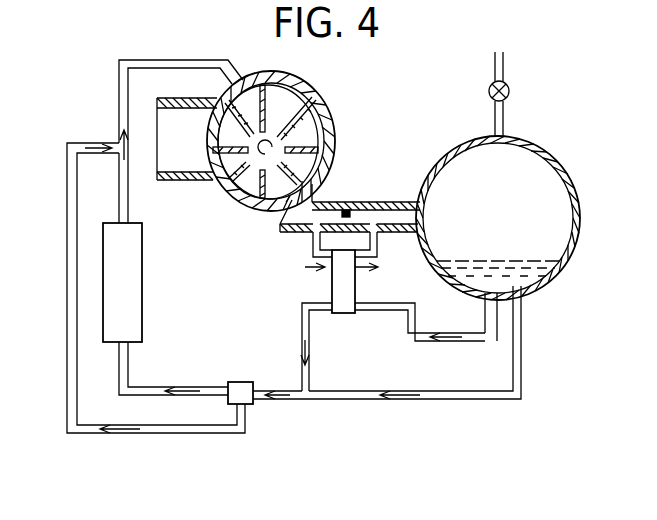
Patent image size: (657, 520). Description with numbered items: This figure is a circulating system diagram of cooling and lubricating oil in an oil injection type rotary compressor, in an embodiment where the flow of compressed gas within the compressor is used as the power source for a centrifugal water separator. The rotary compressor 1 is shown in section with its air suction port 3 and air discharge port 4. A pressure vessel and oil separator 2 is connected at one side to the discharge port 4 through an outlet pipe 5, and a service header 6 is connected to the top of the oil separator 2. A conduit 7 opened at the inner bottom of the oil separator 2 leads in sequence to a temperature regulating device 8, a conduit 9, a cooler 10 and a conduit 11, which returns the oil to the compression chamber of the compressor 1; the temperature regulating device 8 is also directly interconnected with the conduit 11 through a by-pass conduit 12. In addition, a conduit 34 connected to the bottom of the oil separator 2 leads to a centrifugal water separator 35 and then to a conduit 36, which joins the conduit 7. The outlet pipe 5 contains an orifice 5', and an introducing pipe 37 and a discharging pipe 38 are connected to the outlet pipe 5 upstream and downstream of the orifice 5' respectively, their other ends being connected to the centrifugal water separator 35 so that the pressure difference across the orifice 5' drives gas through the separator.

The rotary compressor 1 is at (308, 92).
The pressure vessel and oil separator 2 is at (573, 188).
The air suction port 3 is at (165, 128).
The air discharge port 4 is at (282, 223).
The outlet pipe 5 is at (350, 196).
The orifice 5' is at (388, 188).
The service header 6 is at (508, 92).
The conduit 7 is at (296, 401).
The temperature regulating device 8 is at (240, 382).
The conduit 9 is at (146, 387).
The cooler 10 is at (142, 290).
The conduit 11 is at (170, 62).
The by-pass conduit 12 is at (67, 277).
The conduit 34 is at (386, 312).
The centrifugal water separator 35 is at (341, 313).
The conduit 36 is at (300, 328).
The introducing pipe 37 is at (315, 249).
The discharging pipe 38 is at (377, 258).